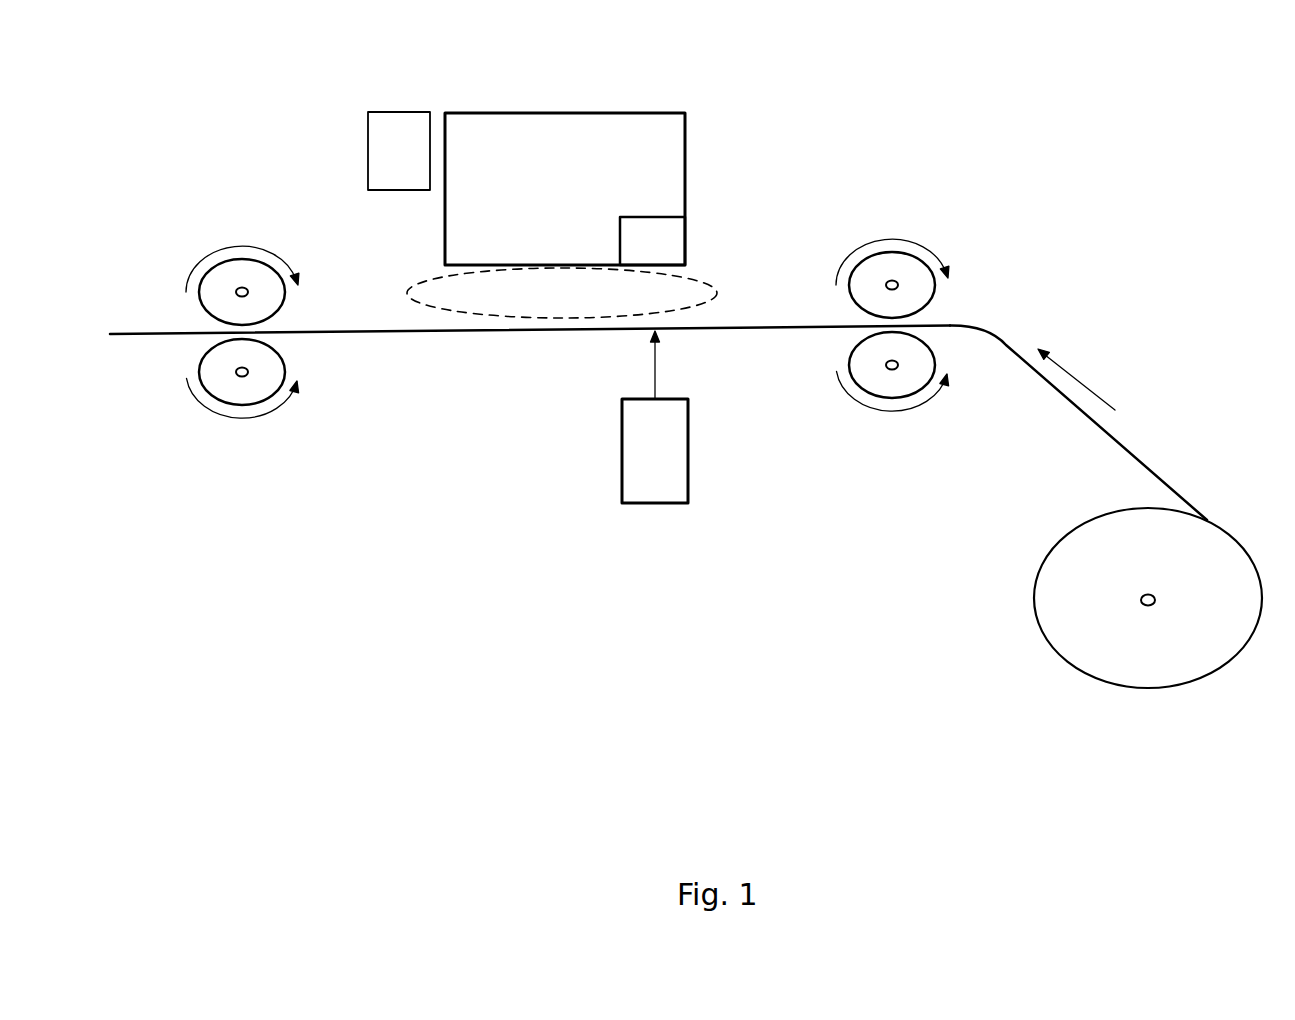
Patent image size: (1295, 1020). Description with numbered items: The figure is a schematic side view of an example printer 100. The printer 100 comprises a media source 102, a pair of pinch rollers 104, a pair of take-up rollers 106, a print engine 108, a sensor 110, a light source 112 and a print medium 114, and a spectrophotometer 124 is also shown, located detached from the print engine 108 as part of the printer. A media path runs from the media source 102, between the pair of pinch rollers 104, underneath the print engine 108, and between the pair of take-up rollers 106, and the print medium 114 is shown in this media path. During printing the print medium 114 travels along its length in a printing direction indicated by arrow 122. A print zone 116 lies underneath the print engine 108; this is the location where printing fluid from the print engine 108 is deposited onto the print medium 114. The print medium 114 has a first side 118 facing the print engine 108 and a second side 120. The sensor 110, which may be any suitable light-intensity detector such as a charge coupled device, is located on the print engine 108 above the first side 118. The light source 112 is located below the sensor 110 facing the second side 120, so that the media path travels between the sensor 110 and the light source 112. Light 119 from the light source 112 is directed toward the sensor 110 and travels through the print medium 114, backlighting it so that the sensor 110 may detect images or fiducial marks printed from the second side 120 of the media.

The printer 100 is at (1003, 75).
The media source 102 is at (1130, 657).
The pair of pinch rollers 104 is at (935, 292).
The pair of take-up rollers 106 is at (198, 302).
The print engine 108 is at (549, 182).
The sensor 110 is at (687, 243).
The light source 112 is at (621, 474).
The print medium 114 is at (1153, 472).
The print zone 116 is at (428, 282).
The first side 118 is at (772, 312).
The light 119 is at (657, 373).
The second side 120 is at (368, 336).
The arrow 122 is at (1078, 378).
The spectrophotometer 124 is at (367, 147).